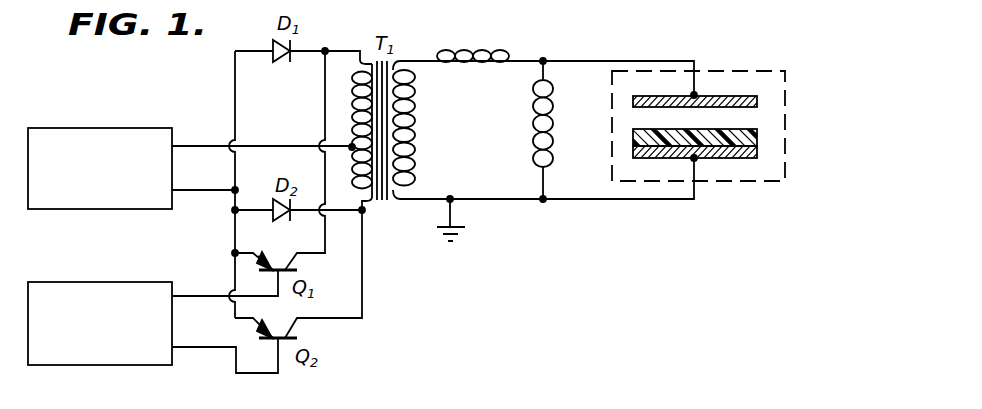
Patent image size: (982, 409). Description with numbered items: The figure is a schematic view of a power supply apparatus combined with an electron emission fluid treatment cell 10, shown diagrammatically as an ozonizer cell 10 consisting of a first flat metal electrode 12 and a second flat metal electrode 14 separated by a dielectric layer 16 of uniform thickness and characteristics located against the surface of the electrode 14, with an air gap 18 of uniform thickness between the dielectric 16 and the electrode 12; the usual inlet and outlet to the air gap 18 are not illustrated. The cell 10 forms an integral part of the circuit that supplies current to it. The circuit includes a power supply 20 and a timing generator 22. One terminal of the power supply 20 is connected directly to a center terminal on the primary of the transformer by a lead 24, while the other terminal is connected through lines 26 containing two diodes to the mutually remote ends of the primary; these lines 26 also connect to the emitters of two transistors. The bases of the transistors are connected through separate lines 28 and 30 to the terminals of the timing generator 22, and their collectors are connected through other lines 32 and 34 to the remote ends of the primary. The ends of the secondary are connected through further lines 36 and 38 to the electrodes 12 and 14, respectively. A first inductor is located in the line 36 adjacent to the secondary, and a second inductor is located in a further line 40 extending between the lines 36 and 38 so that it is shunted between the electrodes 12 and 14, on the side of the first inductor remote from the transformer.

The cell 10 is at (786, 95).
The first flat metal electrode 12 is at (714, 96).
The second flat metal electrode 14 is at (737, 156).
The dielectric layer 16 is at (757, 137).
The air gap 18 is at (737, 116).
The power supply 20 is at (116, 98).
The timing generator 22 is at (115, 282).
The lead 24 is at (207, 146).
The lines 26 is at (200, 192).
The line 28 is at (210, 296).
The line 30 is at (211, 348).
The line 32 is at (325, 90).
The line 34 is at (362, 288).
The line 36 is at (525, 60).
The line 38 is at (500, 200).
The line 40 is at (540, 178).